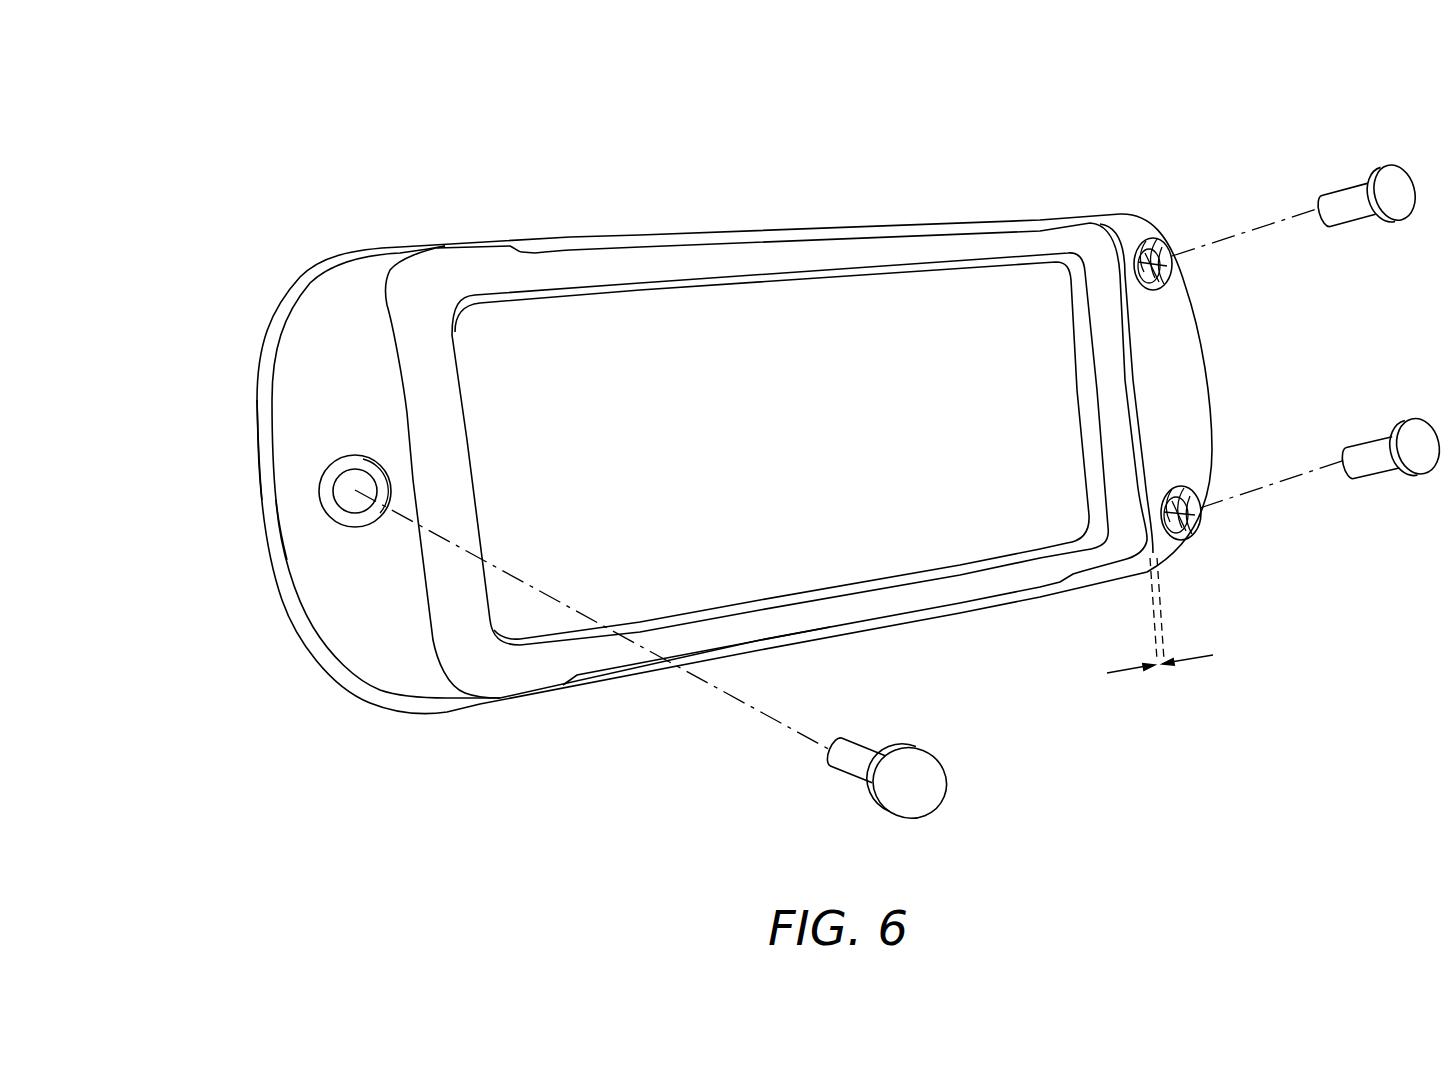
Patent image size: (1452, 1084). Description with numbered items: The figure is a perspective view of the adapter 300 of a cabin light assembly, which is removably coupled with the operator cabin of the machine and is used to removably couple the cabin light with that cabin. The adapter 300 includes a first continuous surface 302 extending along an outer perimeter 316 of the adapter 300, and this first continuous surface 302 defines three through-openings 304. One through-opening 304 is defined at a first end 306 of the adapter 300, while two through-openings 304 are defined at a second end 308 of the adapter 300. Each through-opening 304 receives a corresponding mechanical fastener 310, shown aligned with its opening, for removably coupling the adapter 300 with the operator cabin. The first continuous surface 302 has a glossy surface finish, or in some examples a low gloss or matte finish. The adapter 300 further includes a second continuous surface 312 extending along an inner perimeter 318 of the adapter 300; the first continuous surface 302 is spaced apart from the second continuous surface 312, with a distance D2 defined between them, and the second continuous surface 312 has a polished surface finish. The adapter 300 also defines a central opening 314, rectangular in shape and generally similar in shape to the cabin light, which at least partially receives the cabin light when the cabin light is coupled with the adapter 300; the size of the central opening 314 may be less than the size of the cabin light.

The adapter 300 is at (1188, 119).
The first continuous surface 302 is at (335, 313).
The through-openings 304 is at (351, 510).
The first end 306 is at (230, 492).
The second end 308 is at (1236, 386).
The mechanical fastener 310 is at (1357, 212).
The second continuous surface 312 is at (543, 270).
The central opening 314 is at (922, 541).
The outer perimeter 316 is at (262, 393).
The inner perimeter 318 is at (780, 305).
The distance D2 is at (1127, 677).